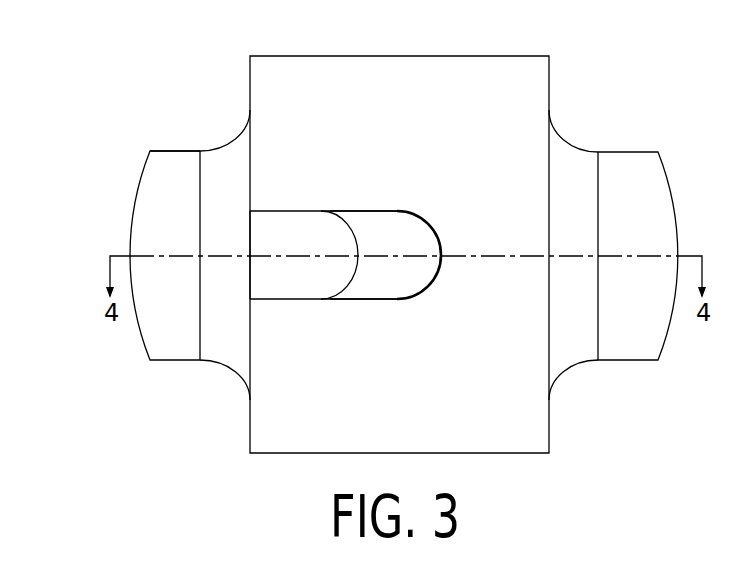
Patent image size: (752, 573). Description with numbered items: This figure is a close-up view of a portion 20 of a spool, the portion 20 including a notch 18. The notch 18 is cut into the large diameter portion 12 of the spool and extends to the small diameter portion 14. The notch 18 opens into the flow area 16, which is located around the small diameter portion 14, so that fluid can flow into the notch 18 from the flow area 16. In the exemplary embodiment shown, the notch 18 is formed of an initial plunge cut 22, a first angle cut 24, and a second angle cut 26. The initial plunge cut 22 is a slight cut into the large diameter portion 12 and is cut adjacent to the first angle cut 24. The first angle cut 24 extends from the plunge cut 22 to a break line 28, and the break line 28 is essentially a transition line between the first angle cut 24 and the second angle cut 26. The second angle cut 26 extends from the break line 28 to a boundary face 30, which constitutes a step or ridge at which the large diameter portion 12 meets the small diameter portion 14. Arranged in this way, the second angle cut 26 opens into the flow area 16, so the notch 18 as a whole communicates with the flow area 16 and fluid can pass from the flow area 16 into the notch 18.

The large diameter portion 12 is at (427, 57).
The small diameter portion 14 is at (172, 362).
The flow area 16 is at (204, 131).
The notch 18 is at (322, 326).
The portion 20 is at (122, 87).
The initial plunge cut 22 is at (443, 249).
The first angle cut 24 is at (413, 283).
The second angle cut 26 is at (301, 227).
The break line 28 is at (357, 238).
The boundary face 30 is at (250, 240).